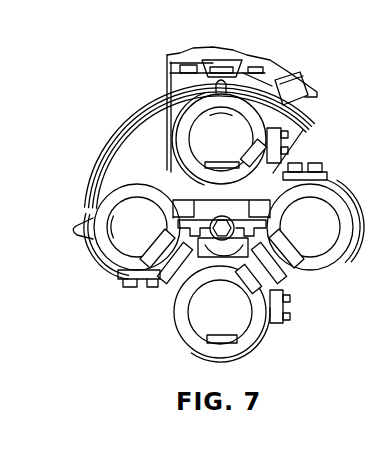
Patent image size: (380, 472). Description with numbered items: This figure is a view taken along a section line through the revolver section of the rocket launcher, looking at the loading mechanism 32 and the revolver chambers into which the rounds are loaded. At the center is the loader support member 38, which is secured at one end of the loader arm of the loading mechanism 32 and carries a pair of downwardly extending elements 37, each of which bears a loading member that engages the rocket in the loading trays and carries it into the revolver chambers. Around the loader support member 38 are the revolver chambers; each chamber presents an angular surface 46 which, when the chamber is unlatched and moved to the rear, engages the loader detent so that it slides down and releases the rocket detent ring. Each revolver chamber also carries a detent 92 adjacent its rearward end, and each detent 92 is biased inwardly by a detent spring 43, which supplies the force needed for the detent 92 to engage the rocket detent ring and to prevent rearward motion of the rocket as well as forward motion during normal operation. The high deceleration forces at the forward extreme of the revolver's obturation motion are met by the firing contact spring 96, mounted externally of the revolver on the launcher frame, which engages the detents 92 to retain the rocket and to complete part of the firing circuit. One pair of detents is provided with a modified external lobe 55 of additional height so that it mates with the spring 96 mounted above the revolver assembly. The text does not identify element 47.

The firing contact spring 96 is at (232, 60).
The modified external lobe 55 is at (219, 82).
The detent spring 43 is at (298, 130).
The detent 92 is at (231, 118).
The angular surface 46 is at (243, 163).
The loader support member 38 is at (240, 222).
The downwardly extending element 37 is at (283, 275).
The loading mechanism 32 is at (162, 270).
The clip arm 47 is at (117, 283).